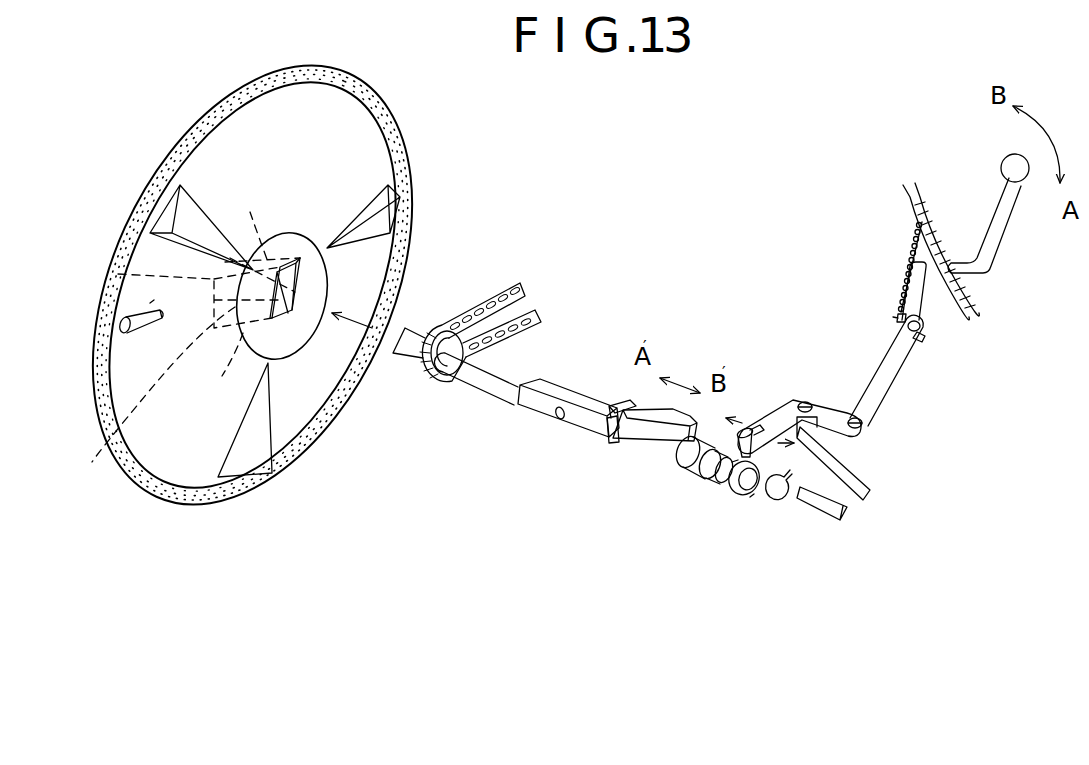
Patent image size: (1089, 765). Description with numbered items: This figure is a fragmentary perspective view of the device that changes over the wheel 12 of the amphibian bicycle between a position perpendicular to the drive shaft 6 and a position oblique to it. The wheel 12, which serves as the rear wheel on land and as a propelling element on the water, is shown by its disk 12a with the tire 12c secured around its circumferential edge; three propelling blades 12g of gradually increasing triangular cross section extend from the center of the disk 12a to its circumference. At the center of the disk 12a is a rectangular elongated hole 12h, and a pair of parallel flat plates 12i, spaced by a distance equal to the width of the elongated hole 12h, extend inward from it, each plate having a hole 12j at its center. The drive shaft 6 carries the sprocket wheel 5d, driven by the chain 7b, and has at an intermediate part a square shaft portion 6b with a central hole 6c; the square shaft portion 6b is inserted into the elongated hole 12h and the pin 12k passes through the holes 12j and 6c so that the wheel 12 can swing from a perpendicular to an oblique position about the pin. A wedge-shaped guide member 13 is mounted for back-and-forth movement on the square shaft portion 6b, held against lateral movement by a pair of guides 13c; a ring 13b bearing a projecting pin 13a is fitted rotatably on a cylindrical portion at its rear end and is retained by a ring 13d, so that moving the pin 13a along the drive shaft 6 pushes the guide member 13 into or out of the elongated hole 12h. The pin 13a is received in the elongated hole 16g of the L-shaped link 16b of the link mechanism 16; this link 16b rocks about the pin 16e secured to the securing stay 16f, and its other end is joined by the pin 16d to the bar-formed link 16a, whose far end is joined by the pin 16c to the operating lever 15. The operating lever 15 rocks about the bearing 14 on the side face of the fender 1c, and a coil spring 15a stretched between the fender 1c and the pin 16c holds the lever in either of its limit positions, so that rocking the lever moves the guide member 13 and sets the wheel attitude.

The fender 1c is at (960, 220).
The sprocket wheel 5d is at (450, 378).
The drive shaft 6 is at (493, 397).
The square shaft portion 6b is at (585, 420).
The hole 6c is at (557, 418).
The chain 7b is at (538, 302).
The wheel 12 is at (405, 138).
The disk 12a is at (190, 165).
The tire 12c is at (180, 498).
The propelling blades 12g is at (175, 218).
The elongated hole 12h is at (287, 258).
The parallel flat plates 12i is at (118, 274).
The hole 12j is at (238, 293).
The pin 12k is at (113, 331).
The guide member 13 is at (662, 436).
The pin 13a is at (744, 427).
The ring 13b is at (737, 491).
The guides 13c is at (623, 404).
The ring 13d is at (776, 500).
The bearing 14 is at (965, 290).
The operating lever 15 is at (995, 230).
The coil spring 15a is at (905, 246).
The link mechanism 16 is at (871, 413).
The link 16a is at (905, 370).
The L-shaped link 16b is at (836, 410).
The pin 16c is at (926, 332).
The pin 16d is at (861, 428).
The pin 16e is at (806, 400).
The securing stay 16f is at (868, 470).
The elongated hole 16g is at (759, 430).